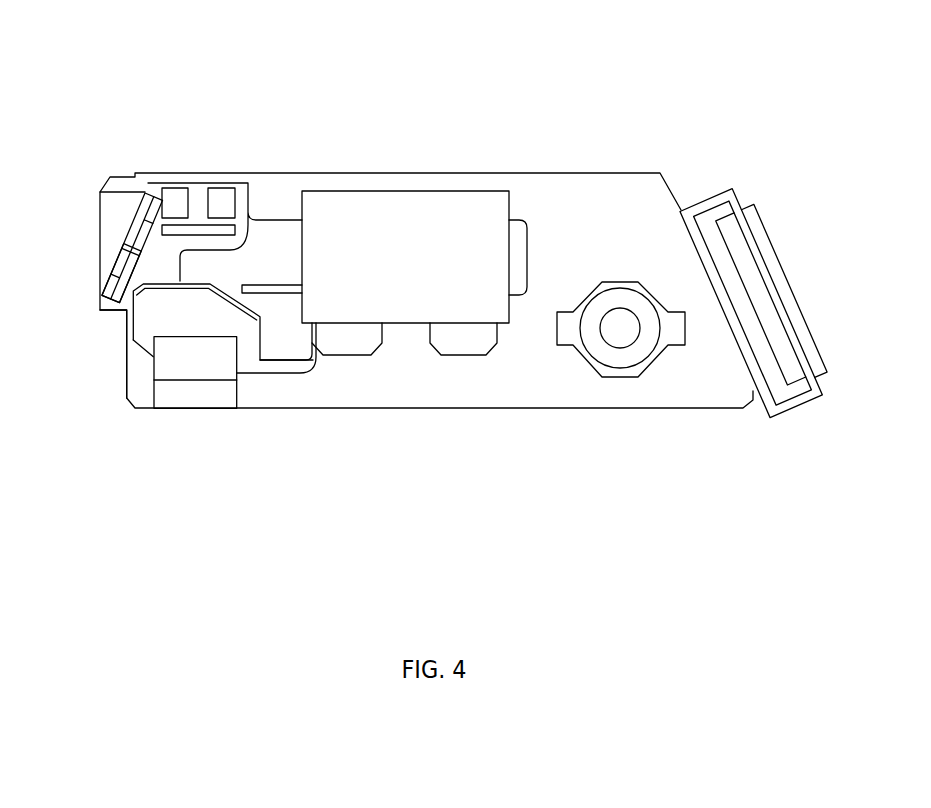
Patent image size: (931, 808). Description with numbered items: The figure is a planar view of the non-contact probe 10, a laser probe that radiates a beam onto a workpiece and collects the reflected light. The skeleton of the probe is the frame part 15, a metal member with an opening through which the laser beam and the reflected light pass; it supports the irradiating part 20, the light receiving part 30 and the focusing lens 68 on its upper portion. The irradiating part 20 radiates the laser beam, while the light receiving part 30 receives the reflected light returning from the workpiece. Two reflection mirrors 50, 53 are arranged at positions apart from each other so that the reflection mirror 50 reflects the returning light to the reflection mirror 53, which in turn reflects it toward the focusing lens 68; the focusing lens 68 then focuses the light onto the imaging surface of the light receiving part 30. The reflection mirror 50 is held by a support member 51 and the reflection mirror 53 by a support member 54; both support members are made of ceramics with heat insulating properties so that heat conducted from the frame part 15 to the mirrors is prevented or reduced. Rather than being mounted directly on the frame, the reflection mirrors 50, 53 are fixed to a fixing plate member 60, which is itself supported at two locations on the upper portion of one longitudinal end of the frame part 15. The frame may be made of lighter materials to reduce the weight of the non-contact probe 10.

The non-contact probe 10 is at (435, 232).
The frame part 15 is at (426, 318).
The irradiating part 20 is at (621, 306).
The light receiving part 30 is at (757, 300).
The reflection mirror 50 is at (187, 322).
The support member 51 is at (195, 395).
The reflection mirror 53 is at (98, 273).
The support member 54 is at (99, 248).
The fixing plate member 60 is at (186, 354).
The focusing lens 68 is at (414, 242).